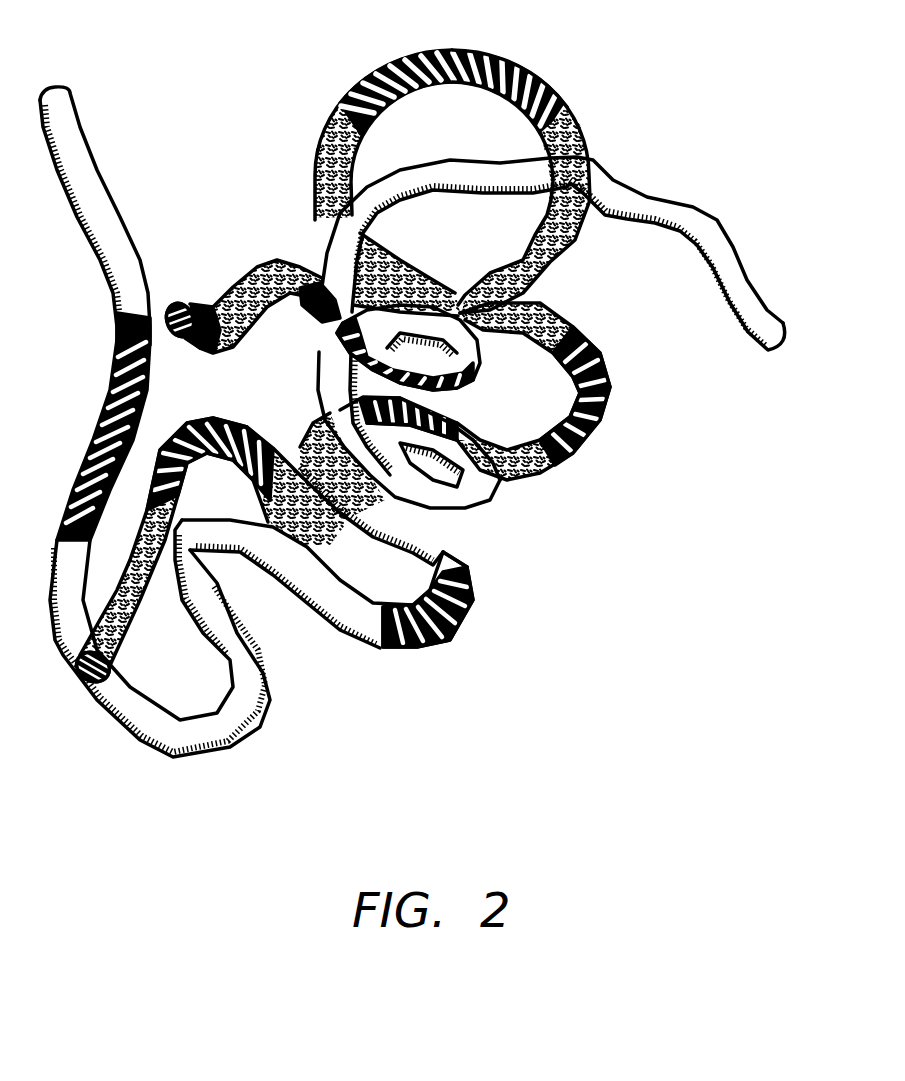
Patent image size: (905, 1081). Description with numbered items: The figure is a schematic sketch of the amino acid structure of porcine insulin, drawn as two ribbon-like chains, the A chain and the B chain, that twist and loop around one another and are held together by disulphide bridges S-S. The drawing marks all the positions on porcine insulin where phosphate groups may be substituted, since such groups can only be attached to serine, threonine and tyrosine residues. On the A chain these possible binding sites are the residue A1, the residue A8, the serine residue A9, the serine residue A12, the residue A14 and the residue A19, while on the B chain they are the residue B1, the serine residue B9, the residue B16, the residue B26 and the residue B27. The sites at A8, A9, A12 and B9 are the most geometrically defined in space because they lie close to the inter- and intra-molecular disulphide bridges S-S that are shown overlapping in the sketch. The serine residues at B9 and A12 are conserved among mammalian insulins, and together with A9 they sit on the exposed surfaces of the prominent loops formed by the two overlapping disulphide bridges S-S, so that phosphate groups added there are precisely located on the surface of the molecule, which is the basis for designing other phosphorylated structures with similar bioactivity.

The A-chain residue A1 is at (239, 306).
The A-chain residue A8 is at (441, 121).
The A-chain serine residue A9 is at (521, 159).
The A-chain serine residue A12 is at (570, 391).
The A-chain residue A14 is at (424, 442).
The A-chain residue A19 is at (269, 536).
The B-chain residue B1 is at (576, 332).
The B-chain serine residue B9 is at (426, 355).
The B-chain residue B16 is at (357, 584).
The B-chain residue B26 is at (142, 548).
The B-chain residue B27 is at (95, 239).
The disulphide bridge S-S is at (316, 423).